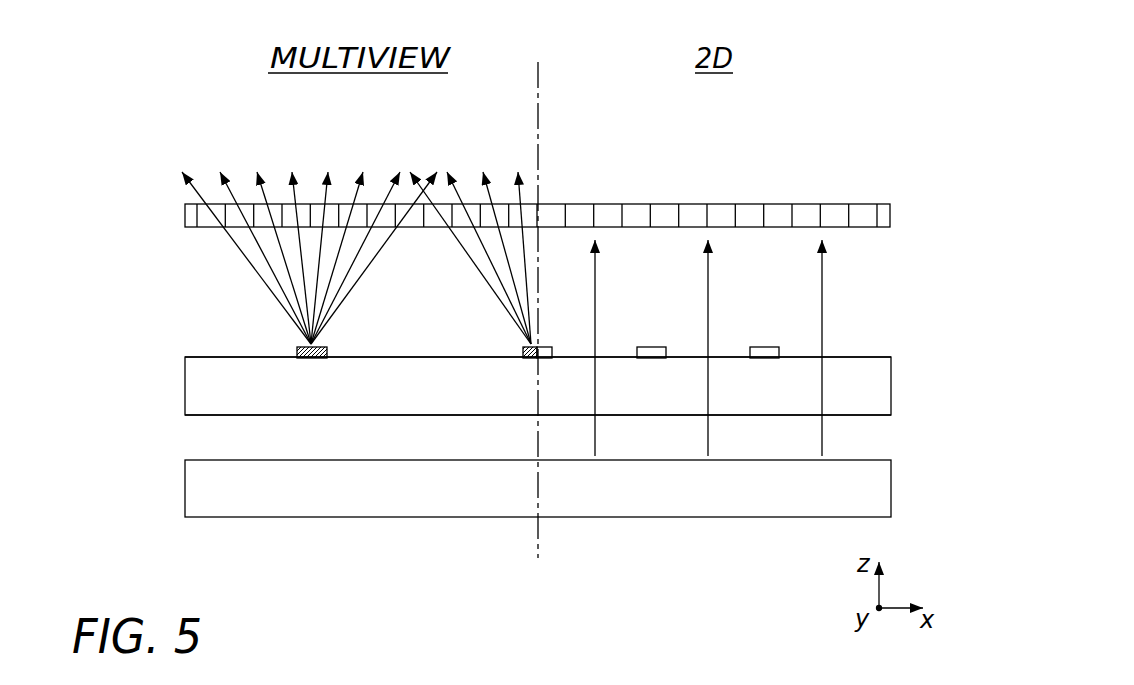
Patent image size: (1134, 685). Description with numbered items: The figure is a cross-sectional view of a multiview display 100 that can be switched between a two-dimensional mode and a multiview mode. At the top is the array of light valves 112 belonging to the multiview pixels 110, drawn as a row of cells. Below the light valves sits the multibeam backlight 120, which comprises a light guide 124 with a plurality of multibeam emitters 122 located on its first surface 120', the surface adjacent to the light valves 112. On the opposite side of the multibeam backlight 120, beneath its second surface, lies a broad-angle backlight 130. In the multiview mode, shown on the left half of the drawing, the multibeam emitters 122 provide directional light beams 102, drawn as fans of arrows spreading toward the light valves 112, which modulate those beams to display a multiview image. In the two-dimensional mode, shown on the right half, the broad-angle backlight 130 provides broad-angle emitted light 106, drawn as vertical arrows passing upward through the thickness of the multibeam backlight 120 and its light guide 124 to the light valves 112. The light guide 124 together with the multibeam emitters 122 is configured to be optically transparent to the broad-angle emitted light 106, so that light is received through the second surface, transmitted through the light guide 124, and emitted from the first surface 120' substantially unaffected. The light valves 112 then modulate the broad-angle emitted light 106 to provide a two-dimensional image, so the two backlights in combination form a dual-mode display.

The multiview display 100 is at (848, 94).
The directional light beams 102 is at (238, 270).
The broad-angle emitted light 106 is at (868, 253).
The multiview pixels 110 is at (174, 210).
The light valves 112 is at (537, 215).
The multibeam backlight 120 is at (543, 370).
The first surface of the multibeam backlight 120' is at (577, 336).
The multibeam emitters 122 is at (286, 339).
The light guide 124 is at (192, 387).
The broad-angle backlight 130 is at (885, 487).